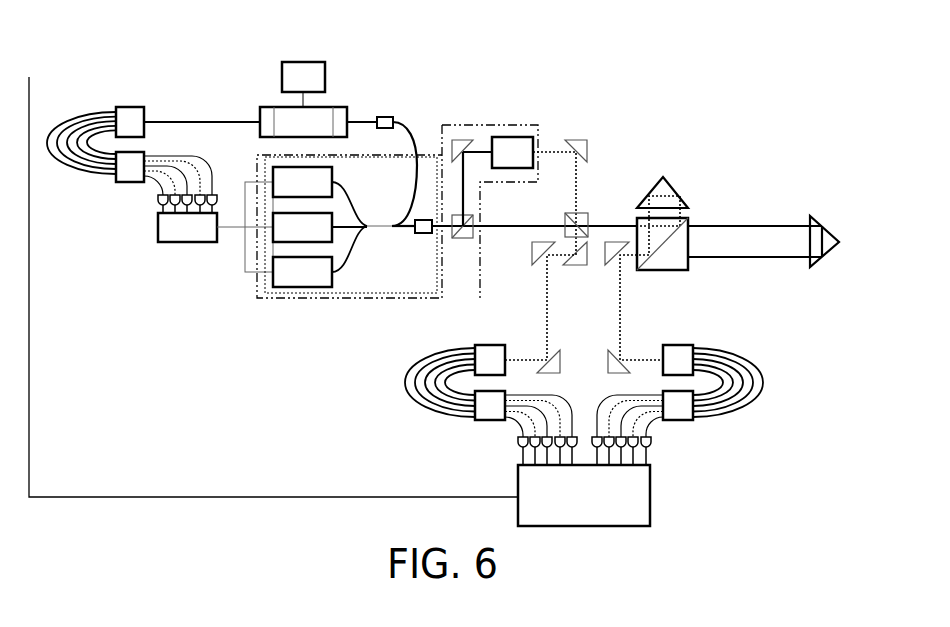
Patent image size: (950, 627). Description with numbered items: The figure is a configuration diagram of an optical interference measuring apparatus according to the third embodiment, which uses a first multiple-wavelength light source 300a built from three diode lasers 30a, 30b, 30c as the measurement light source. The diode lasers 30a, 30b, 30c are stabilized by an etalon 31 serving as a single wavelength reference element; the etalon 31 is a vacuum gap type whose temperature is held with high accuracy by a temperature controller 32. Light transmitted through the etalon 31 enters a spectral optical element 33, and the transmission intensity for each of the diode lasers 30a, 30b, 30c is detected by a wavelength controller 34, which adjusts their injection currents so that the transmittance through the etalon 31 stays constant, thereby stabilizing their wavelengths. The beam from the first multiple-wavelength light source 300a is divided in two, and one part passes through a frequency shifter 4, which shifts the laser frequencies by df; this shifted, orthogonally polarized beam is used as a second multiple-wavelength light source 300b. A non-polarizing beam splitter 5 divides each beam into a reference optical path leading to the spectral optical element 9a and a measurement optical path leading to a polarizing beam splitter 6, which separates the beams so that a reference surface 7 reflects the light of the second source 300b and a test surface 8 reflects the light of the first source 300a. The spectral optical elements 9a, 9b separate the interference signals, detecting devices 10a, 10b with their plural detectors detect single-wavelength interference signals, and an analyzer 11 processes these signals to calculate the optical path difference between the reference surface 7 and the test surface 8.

The frequency shifter 4 is at (512, 148).
The non-polarizing beam splitter 5 is at (590, 213).
The polarizing beam splitter 6 is at (680, 262).
The reference surface 7 is at (660, 200).
The test surface 8 is at (810, 215).
The spectral optical element 9a is at (485, 362).
The spectral optical element 9b is at (690, 408).
The detecting device 10a is at (519, 440).
The detecting device 10b is at (652, 441).
The analyzer 11 is at (633, 478).
The diode laser 30a is at (303, 276).
The diode laser 30b is at (288, 232).
The diode laser 30c is at (292, 183).
The first multiple-wavelength light source 300a is at (433, 268).
The second multiple-wavelength light source 300b is at (538, 147).
The etalon 31 is at (270, 112).
The temperature controller 32 is at (290, 78).
The spectral optical element 33 is at (130, 168).
The wavelength controller 34 is at (173, 222).